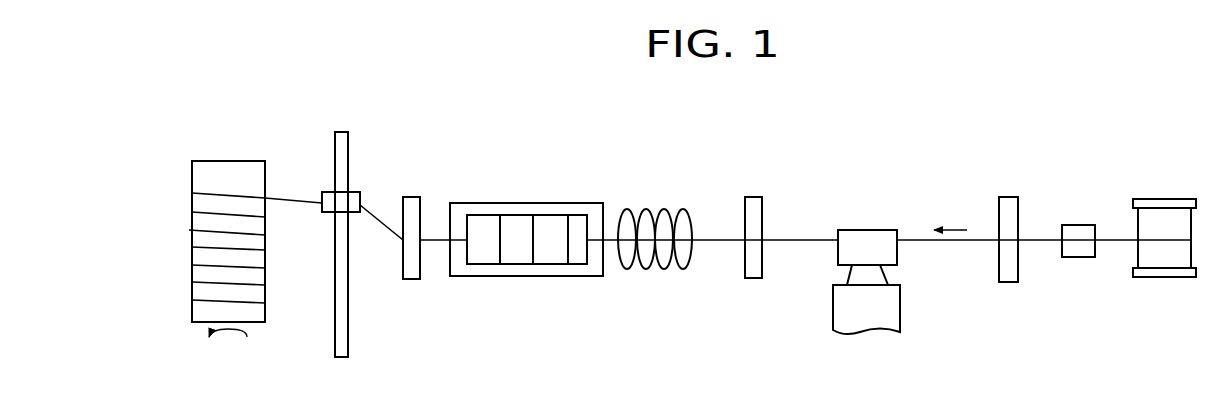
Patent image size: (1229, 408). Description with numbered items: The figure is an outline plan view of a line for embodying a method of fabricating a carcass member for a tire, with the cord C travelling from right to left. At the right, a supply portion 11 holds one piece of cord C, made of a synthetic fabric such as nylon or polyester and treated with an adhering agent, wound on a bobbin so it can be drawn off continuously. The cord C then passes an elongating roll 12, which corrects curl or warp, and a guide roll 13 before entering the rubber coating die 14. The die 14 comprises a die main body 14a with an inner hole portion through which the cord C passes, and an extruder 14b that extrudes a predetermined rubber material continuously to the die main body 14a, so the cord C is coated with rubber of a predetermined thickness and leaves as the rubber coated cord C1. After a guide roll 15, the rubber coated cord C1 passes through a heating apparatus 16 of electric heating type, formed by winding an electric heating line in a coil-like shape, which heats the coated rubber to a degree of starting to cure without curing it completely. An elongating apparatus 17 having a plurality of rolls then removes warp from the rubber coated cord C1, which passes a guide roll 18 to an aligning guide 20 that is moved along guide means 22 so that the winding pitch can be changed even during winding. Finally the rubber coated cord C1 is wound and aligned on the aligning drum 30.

The supply portion 11 is at (1165, 196).
The elongating roll 12 is at (1081, 222).
The guide roll 13 is at (1010, 197).
The rubber coating die 14 is at (869, 255).
The die main body 14a is at (847, 253).
The extruder 14b is at (892, 307).
The guide roll 15 is at (752, 196).
The heating apparatus 16 is at (655, 200).
The elongating apparatus 17 is at (526, 200).
The guide roll 18 is at (410, 200).
The aligning guide 20 is at (330, 192).
The guide means 22 is at (343, 330).
The aligning drum 30 is at (227, 170).
The cord C is at (967, 243).
The rubber coated cord C1 is at (292, 202).